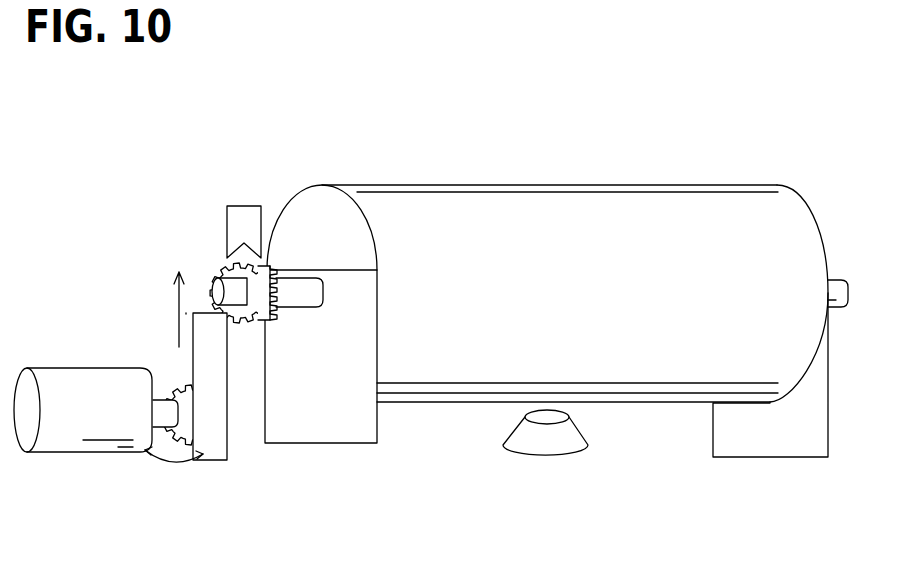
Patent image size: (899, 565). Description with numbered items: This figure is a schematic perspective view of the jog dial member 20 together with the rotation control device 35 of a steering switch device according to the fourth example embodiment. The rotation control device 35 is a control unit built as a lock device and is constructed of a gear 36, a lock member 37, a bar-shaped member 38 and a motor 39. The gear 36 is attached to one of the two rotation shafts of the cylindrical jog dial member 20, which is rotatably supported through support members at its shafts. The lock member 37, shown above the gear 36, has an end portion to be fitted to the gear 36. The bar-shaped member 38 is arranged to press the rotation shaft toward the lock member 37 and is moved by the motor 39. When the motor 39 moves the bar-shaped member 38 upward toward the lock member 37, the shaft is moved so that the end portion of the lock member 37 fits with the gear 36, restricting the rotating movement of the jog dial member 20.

The jog dial member 20 is at (415, 183).
The rotation control device 35 is at (165, 222).
The gear 36 is at (258, 322).
The lock member 37 is at (227, 228).
The bar-shaped member 38 is at (214, 442).
The motor 39 is at (88, 367).